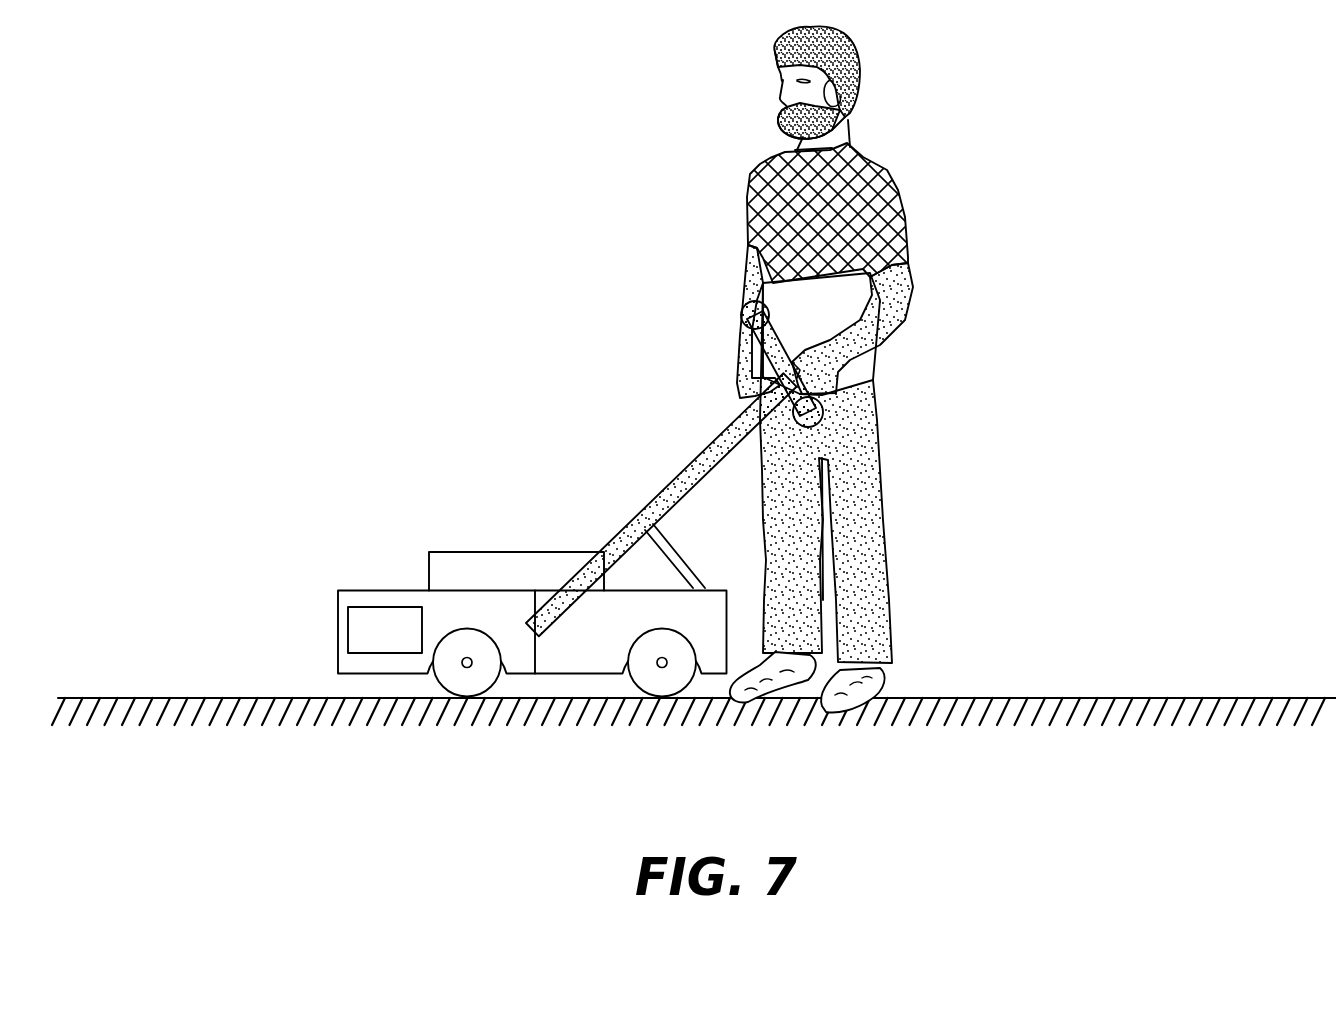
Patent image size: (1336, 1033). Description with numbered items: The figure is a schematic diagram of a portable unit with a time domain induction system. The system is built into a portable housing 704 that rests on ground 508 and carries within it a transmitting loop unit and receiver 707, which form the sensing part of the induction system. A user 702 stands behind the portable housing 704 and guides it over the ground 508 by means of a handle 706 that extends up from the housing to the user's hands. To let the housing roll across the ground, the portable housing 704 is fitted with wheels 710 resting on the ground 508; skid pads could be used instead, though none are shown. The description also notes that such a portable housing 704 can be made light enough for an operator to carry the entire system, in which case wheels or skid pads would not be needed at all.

The ground 508 is at (205, 698).
The operator 702 is at (908, 230).
The portable housing 704 is at (355, 592).
The handle 706 is at (620, 502).
The transmitting loop unit and receiver 707 is at (385, 630).
The wheels 710 is at (636, 682).